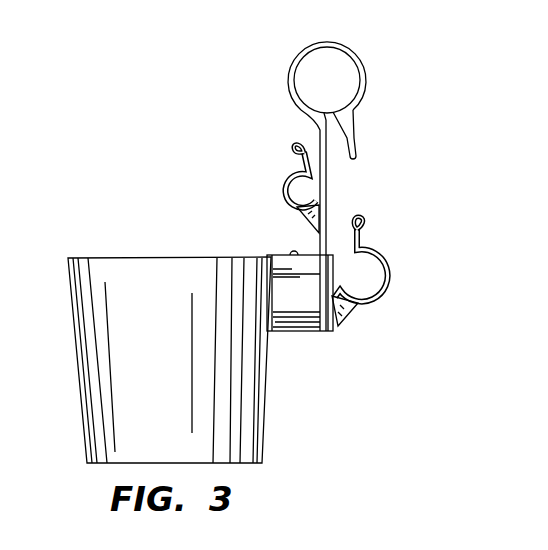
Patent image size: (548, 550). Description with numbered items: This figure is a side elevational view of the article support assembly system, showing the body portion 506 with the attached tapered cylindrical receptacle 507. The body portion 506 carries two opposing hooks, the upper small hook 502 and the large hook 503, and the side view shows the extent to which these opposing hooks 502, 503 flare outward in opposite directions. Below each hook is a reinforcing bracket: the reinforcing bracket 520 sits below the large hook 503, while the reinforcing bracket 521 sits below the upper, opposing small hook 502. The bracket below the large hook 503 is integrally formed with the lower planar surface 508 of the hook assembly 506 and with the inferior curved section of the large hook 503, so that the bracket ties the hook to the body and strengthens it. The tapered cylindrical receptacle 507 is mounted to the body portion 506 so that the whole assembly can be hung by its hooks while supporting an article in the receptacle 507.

The small hook 502 is at (298, 155).
The large hook 503 is at (381, 269).
The body portion 506 is at (353, 204).
The tapered cylindrical receptacle 507 is at (80, 384).
The lower planar surface 508 is at (327, 181).
The reinforcing bracket 520 is at (368, 331).
The reinforcing bracket 521 is at (303, 221).